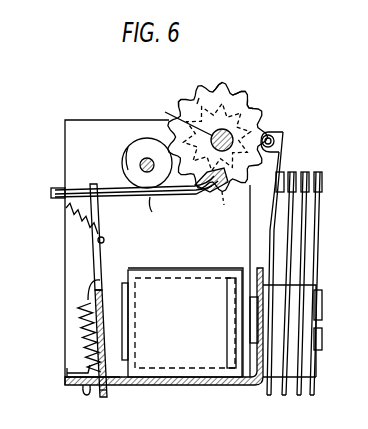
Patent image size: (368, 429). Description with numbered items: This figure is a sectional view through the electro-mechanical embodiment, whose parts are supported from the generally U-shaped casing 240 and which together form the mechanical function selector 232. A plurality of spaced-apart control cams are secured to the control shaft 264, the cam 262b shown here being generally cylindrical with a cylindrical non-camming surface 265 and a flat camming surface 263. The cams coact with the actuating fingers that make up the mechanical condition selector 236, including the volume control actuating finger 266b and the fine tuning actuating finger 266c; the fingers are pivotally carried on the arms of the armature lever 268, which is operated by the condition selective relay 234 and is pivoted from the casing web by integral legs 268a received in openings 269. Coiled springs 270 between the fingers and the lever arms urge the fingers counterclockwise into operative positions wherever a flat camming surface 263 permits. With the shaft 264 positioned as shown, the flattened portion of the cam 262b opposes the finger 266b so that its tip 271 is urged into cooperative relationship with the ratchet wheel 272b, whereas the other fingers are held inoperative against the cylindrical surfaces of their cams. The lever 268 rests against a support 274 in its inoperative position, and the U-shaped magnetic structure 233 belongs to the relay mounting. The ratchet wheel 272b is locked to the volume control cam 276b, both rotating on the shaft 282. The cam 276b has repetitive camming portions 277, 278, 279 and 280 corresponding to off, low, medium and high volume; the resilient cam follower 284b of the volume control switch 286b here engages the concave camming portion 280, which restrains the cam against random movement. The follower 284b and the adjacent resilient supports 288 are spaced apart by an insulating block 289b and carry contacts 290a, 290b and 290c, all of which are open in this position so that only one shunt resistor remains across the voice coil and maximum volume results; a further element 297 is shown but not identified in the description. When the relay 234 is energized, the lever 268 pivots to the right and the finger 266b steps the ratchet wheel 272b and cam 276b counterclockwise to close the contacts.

The mechanical function selector 232 is at (116, 113).
The U-shaped magnetic structure 233 is at (80, 317).
The condition selective relay 234 is at (186, 385).
The mechanical condition selector 236 is at (58, 188).
The U-shaped casing 240 is at (243, 386).
The control cam 262b is at (153, 141).
The flat camming surface 263 is at (152, 210).
The control shaft 264 is at (140, 164).
The cylindrical non-camming surface 265 is at (124, 150).
The volume control actuating finger 266b is at (182, 206).
The fine tuning actuating finger 266c is at (163, 197).
The armature lever 268 is at (103, 257).
The integral legs 268a is at (101, 394).
The openings 269 is at (108, 388).
The coiled springs 270 is at (70, 214).
The tip 271 is at (225, 209).
The ratchet wheel 272b is at (180, 110).
The support 274 is at (67, 374).
The volume control cam 276b is at (216, 84).
The camming portion 277 is at (222, 84).
The camming portion 278 is at (243, 96).
The camming portion 279 is at (258, 118).
The camming portion 280 is at (198, 104).
The shaft 282 is at (182, 121).
The resilient cam follower 284b is at (284, 136).
The volume control switch 286b is at (352, 276).
The resilient support 288 is at (250, 236).
The insulating block 289b is at (262, 310).
The contacts 290a is at (288, 232).
The contacts 290b is at (302, 226).
The contacts 290c is at (296, 216).
The contact 297 is at (300, 306).